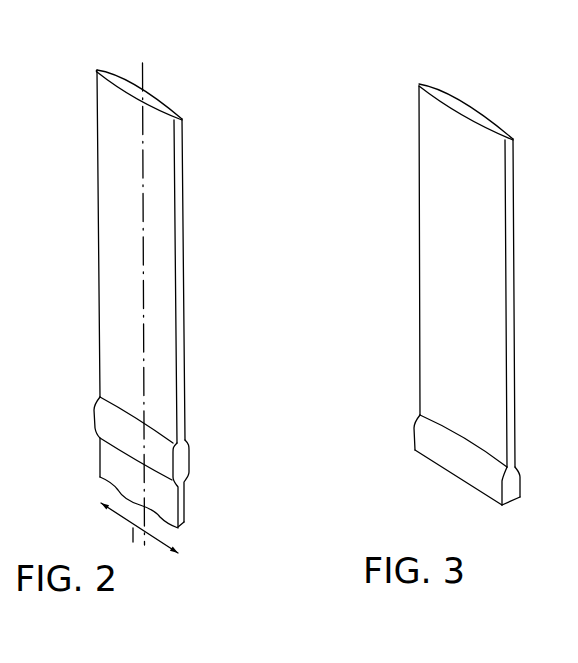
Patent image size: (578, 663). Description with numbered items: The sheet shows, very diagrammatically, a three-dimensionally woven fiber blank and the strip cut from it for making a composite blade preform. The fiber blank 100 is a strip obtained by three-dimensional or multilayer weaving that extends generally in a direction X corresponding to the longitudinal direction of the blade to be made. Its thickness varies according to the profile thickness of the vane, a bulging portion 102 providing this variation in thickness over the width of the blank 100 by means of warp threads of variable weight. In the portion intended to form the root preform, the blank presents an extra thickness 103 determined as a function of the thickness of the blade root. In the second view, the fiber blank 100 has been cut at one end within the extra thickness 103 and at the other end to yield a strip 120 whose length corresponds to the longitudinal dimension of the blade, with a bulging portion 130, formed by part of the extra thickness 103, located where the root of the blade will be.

In FIG. 2, the fiber blank 100 is at (97, 243).
In FIG. 2, the bulging portion 102 is at (160, 106).
In FIG. 2, the extra thickness 103 is at (97, 408).
In FIG. 2, the direction X is at (143, 68).
In FIG. 3, the strip 120 is at (419, 265).
In FIG. 3, the bulging portion 130 is at (420, 431).